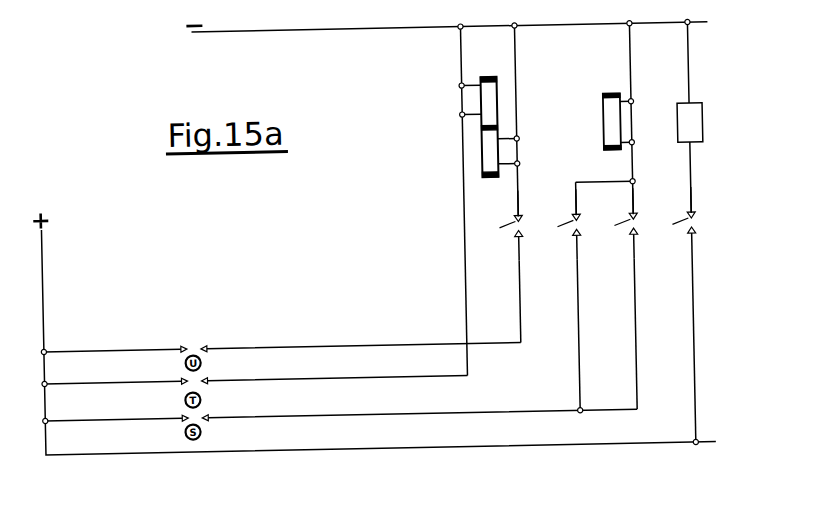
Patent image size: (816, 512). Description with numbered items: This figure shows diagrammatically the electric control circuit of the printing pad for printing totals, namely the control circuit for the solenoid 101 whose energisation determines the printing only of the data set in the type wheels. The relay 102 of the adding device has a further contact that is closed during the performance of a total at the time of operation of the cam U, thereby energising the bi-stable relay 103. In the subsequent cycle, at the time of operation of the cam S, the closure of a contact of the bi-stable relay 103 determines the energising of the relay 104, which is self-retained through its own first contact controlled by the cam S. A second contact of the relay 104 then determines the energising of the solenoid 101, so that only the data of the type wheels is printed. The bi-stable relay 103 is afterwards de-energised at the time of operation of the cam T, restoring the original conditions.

The solenoid 101 is at (684, 122).
The relay 102 is at (510, 234).
The bi-stable relay 103 is at (488, 149).
The relay 104 is at (610, 139).